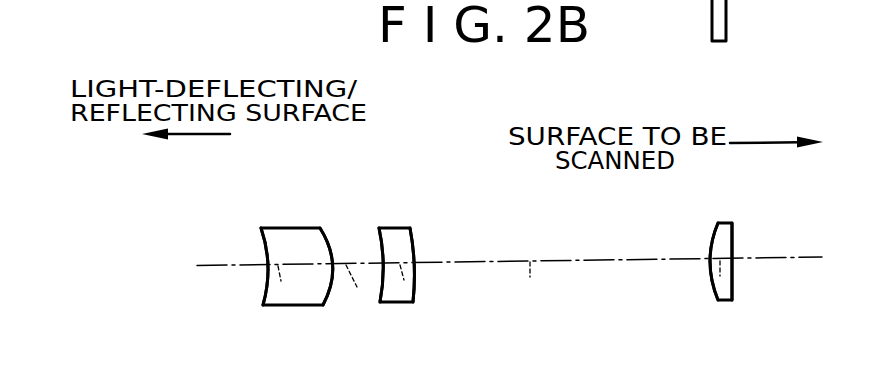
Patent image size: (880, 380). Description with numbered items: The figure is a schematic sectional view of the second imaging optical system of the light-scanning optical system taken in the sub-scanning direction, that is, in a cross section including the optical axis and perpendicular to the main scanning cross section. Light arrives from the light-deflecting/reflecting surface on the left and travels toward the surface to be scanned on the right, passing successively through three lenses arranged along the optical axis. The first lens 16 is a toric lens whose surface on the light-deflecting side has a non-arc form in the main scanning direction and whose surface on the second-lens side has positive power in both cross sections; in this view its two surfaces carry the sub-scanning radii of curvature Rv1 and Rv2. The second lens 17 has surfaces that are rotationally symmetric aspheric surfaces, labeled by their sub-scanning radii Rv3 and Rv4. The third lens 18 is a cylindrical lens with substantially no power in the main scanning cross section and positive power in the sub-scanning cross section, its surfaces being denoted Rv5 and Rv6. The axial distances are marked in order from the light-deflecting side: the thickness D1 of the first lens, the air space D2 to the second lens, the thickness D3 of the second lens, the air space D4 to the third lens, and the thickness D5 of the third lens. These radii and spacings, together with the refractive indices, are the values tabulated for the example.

The first lens 16 is at (295, 294).
The second lens 17 is at (396, 301).
The third lens 18 is at (733, 282).
The radius of curvature in the sub-scanning cross section of the first lens surface Rv1 is at (262, 243).
The radius of curvature in the sub-scanning cross section of the second lens surface Rv2 is at (328, 242).
The radius of curvature in the sub-scanning cross section of the third lens surface Rv3 is at (380, 241).
The radius of curvature in the sub-scanning cross section of the fourth lens surface Rv4 is at (413, 237).
The radius of curvature in the sub-scanning cross section of the fifth lens surface Rv5 is at (712, 243).
The radius of curvature in the sub-scanning cross section of the sixth lens surface Rv6 is at (732, 235).
The lens thickness D1 is at (281, 281).
The lens space D2 is at (348, 289).
The lens thickness D3 is at (404, 282).
The lens space D4 is at (530, 277).
The lens thickness D5 is at (719, 276).